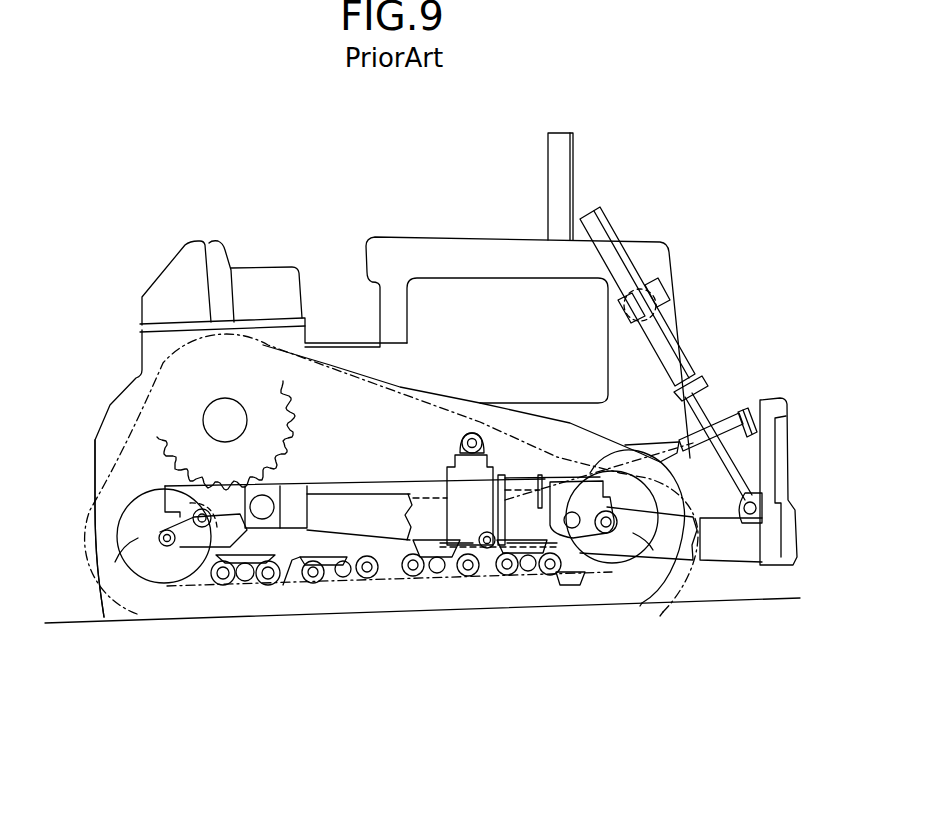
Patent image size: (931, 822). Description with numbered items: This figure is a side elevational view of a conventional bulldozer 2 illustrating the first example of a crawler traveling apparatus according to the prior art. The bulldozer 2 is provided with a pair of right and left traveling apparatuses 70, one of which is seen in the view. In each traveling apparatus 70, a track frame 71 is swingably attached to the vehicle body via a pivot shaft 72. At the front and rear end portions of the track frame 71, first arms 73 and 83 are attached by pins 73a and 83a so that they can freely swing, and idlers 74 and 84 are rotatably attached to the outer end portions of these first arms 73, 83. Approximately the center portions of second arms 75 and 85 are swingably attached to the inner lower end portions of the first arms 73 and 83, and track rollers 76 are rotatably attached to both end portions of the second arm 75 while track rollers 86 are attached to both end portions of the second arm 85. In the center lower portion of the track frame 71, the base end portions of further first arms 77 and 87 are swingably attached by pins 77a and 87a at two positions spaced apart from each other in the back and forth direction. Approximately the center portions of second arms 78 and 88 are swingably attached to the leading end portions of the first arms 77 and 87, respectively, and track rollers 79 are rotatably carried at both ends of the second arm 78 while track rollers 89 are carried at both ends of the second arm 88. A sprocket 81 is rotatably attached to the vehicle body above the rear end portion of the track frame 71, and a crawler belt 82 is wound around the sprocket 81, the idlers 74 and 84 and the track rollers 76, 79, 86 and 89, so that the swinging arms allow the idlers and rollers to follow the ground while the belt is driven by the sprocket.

The bulldozer 2 is at (136, 189).
The traveling apparatus 70 is at (266, 345).
The track frame 71 is at (383, 476).
The pivot shaft 72 is at (283, 483).
The first arm 73 is at (648, 580).
The pin 73a is at (668, 580).
The idler 74 is at (697, 600).
The second arm 75 is at (628, 562).
The track roller 76 is at (556, 576).
The first arm 77 is at (470, 575).
The pin 77a is at (497, 552).
The second arm 78 is at (466, 568).
The track roller 79 is at (438, 578).
The sprocket 81 is at (188, 400).
The crawler belt 82 is at (532, 440).
The first arm 83 is at (184, 584).
The pin 83a is at (152, 570).
The idler 84 is at (108, 597).
The second arm 85 is at (200, 556).
The track roller 86 is at (223, 578).
The first arm 87 is at (349, 582).
The pin 87a is at (288, 572).
The second arm 88 is at (367, 580).
The track roller 89 is at (302, 590).